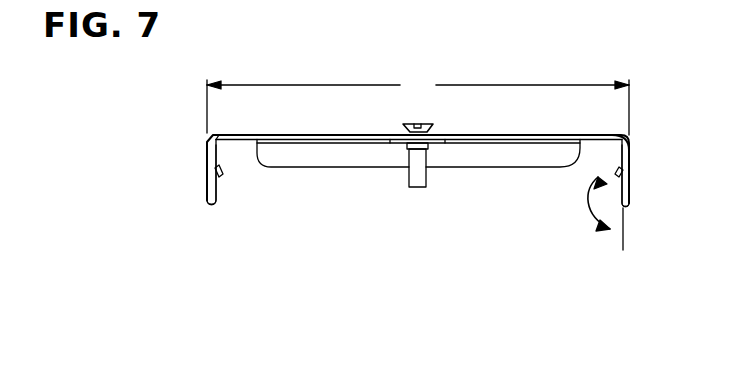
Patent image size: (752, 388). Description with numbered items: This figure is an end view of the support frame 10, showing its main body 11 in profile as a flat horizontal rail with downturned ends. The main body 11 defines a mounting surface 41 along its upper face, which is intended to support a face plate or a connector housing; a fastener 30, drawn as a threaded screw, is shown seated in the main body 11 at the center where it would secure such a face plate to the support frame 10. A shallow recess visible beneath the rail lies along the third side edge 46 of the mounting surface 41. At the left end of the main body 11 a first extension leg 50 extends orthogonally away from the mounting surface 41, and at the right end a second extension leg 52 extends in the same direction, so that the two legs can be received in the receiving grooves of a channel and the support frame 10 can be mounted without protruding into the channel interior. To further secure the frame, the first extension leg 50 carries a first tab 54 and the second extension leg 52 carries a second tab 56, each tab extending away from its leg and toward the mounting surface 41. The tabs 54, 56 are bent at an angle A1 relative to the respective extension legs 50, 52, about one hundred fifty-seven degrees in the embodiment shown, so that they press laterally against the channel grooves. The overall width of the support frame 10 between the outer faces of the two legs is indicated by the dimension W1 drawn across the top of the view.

The support frame 10 is at (232, 135).
The main body 11 is at (473, 145).
The fasteners 30 is at (415, 180).
The mounting surface 41 is at (610, 135).
The third side edge 46 is at (337, 152).
The first extension leg 50 is at (207, 191).
The second extension leg 52 is at (630, 173).
The first tab 54 is at (218, 171).
The second tab 56 is at (620, 167).
The width dimension W1 is at (418, 104).
The angle A1 is at (623, 233).